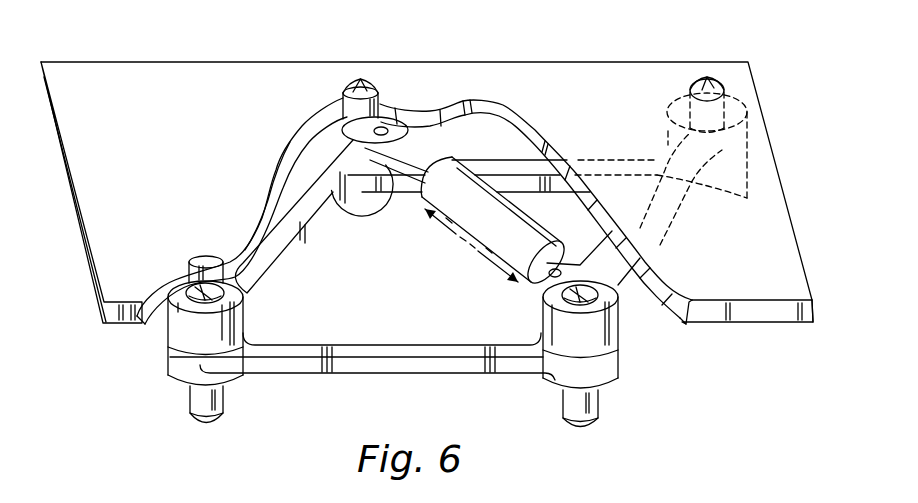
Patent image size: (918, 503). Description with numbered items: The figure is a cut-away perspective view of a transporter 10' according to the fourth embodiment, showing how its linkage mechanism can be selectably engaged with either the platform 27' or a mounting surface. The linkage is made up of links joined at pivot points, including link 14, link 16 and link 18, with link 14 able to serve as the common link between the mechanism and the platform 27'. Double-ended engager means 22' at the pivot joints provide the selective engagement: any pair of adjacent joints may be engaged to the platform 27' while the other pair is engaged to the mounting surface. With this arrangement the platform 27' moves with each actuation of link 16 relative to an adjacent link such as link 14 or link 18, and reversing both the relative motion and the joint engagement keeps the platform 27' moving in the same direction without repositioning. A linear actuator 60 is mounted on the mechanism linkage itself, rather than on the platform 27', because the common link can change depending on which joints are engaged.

The transporter 10' is at (427, 222).
The link 14 is at (358, 365).
The link 16 is at (299, 219).
The link 18 is at (512, 167).
The double-ended engager means 22' is at (393, 329).
The platform 27' is at (427, 170).
The actuator 60 is at (523, 222).